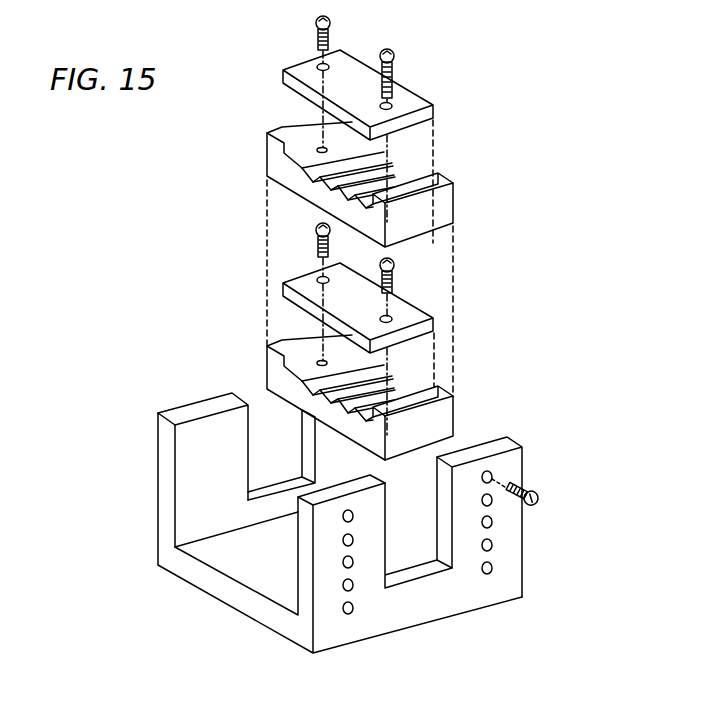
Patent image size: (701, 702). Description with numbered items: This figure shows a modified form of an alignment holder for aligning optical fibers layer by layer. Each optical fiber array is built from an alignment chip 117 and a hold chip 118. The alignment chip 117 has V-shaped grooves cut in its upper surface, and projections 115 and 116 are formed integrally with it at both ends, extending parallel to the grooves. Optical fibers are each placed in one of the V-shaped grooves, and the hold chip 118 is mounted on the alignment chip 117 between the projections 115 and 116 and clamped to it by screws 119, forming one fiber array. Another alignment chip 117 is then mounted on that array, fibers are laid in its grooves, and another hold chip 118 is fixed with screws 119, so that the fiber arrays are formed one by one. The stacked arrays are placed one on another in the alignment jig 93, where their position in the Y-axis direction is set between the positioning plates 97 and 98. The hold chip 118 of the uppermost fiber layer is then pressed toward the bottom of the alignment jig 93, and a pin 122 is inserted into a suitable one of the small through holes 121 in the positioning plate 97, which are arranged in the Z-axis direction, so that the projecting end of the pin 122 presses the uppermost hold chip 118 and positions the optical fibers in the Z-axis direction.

The alignment jig 93 is at (460, 607).
The positioning plate 97 is at (504, 446).
The positioning plate 98 is at (302, 419).
The projection 115 is at (290, 345).
The projection 116 is at (449, 386).
The alignment chip 117 is at (445, 204).
The hold chip 118 is at (429, 124).
The screws 119 is at (398, 64).
The small through holes 121 is at (494, 545).
The pin 122 is at (528, 493).